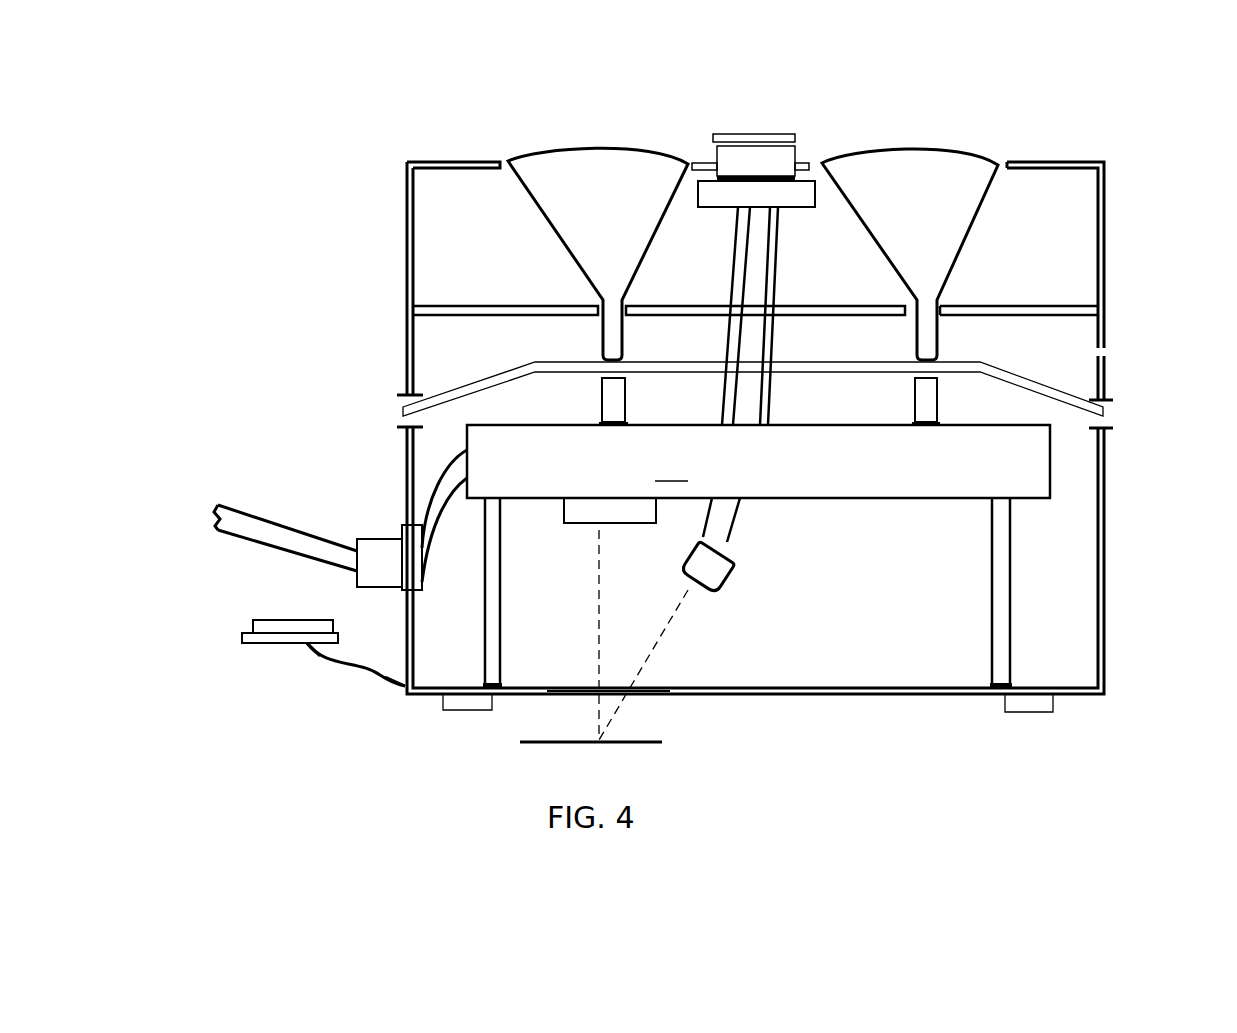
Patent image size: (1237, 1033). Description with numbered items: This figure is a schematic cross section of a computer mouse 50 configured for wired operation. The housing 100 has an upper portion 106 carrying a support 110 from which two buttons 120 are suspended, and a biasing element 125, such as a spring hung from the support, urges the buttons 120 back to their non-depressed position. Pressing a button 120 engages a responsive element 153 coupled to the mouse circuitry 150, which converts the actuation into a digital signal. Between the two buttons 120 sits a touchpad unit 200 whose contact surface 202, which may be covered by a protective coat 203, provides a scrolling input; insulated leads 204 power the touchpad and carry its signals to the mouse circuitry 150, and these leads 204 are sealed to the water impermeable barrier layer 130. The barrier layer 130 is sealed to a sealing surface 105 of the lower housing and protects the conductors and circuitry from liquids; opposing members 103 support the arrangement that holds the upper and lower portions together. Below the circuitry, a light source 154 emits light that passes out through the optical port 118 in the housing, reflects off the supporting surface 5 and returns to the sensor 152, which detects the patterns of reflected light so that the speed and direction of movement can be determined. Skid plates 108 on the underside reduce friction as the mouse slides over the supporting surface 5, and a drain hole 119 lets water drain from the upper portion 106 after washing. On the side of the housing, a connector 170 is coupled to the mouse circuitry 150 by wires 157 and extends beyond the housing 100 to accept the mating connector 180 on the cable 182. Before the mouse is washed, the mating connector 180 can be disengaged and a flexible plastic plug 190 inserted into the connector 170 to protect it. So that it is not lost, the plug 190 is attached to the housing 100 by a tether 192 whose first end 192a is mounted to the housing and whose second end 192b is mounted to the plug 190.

The supporting surface 5 is at (552, 745).
The computer mouse 50 is at (1060, 752).
The housing 100 is at (778, 474).
The opposing member 103 is at (990, 564).
The sealing surface 105 is at (1107, 430).
The upper portion 106 is at (408, 280).
The skid plates 108 is at (1032, 712).
The support 110 is at (518, 303).
The optical port 118 is at (655, 695).
The drain hole 119 is at (1106, 356).
The buttons 120 is at (505, 160).
The biasing element 125 is at (938, 328).
The barrier layer 130 is at (432, 393).
The mouse circuitry 150 is at (758, 559).
The sensor 152 is at (582, 526).
The responsive element 153 is at (938, 400).
The light source 154 is at (730, 560).
The wires 157 is at (440, 468).
The connector 170 is at (427, 592).
The mating connector 180 is at (388, 540).
The cable 182 is at (262, 514).
The plug 190 is at (250, 643).
The tether 192 is at (357, 665).
The first end 192a is at (398, 685).
The second end 192b is at (306, 648).
The touchpad unit 200 is at (760, 238).
The contact surface 202 is at (731, 142).
The protective coat 203 is at (777, 133).
The insulated leads 204 is at (778, 265).